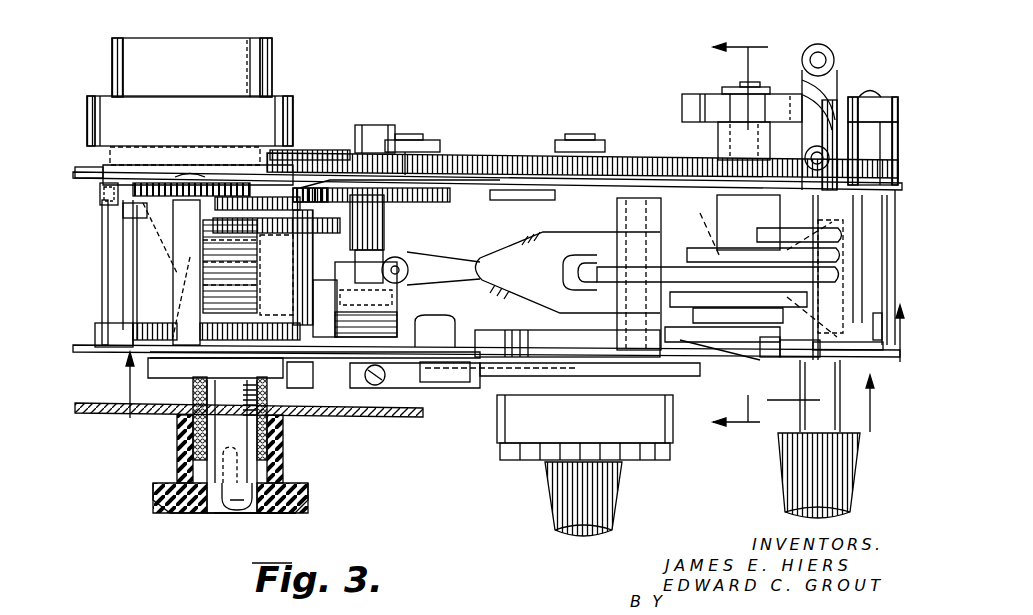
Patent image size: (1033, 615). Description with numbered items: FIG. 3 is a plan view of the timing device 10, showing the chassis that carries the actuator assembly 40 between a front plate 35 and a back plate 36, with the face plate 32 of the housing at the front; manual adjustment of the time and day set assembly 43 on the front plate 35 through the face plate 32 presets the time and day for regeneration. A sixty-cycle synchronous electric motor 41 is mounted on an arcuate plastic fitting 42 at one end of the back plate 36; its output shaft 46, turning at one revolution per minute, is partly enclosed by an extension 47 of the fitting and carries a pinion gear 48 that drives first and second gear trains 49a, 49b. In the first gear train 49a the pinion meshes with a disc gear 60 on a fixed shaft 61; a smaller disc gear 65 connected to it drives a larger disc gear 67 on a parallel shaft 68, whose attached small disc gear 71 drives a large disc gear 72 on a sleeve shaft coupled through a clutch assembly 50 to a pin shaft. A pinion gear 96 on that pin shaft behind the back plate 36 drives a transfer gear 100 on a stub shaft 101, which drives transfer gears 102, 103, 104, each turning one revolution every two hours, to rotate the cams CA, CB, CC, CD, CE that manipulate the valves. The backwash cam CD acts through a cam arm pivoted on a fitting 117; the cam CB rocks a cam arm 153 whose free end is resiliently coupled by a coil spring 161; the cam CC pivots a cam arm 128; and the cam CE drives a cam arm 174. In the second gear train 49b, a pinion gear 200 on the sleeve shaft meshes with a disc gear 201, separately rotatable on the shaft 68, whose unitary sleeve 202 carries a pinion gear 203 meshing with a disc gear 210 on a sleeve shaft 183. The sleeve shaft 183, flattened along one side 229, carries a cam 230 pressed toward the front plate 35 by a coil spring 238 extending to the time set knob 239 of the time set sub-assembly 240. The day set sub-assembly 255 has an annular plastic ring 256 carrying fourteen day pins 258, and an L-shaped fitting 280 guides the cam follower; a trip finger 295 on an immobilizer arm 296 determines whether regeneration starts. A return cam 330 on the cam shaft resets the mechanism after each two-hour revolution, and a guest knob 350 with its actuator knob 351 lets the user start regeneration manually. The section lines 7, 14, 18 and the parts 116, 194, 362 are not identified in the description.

The timing device 10 is at (442, 522).
The section line 14 is at (495, 403).
The section line 18 is at (300, 365).
The face plate 32 is at (388, 415).
The front plate 35 is at (690, 385).
The back plate 36 is at (505, 188).
The actuator assembly 40 is at (640, 198).
The electric motor 41 is at (172, 45).
The arcuate plastic fitting 42 is at (112, 148).
The time and day set assembly 43 is at (533, 472).
The output shaft 46 is at (140, 140).
The extension 47 is at (104, 205).
The pinion gear 48 is at (134, 218).
The first gear train 49a is at (445, 185).
The second gear train 49b is at (158, 312).
The clutch assembly 50 is at (403, 299).
The disc gear 60 is at (160, 185).
The fixed shaft 61 is at (178, 292).
The smaller disc gear 65 is at (205, 190).
The larger disc gear 67 is at (233, 192).
The parallel shaft 68 is at (262, 292).
The small disc gear 71 is at (290, 186).
The large disc gear 72 is at (435, 200).
The pinion gear 96 is at (372, 124).
The transfer gear 100 is at (440, 150).
The stub shaft 101 is at (408, 136).
The transfer gear 102 is at (540, 160).
The transfer gear 103 is at (318, 165).
The transfer gear 104 is at (708, 172).
The bearing block 116 is at (880, 100).
The fitting 117 is at (832, 48).
The cam arm 128 is at (637, 272).
The cam arm 153 is at (500, 248).
The coil spring 161 is at (410, 265).
The cam arm 174 is at (870, 190).
The sleeve shaft 183 is at (228, 457).
The post 194 is at (104, 265).
The pinion gear 200 is at (385, 222).
The disc gear 201 is at (383, 252).
The sleeve 202 is at (294, 290).
The pinion gear 203 is at (290, 415).
The disc gear 210 is at (122, 356).
The flattened side 229 is at (238, 430).
The cam 230 is at (193, 375).
The coil spring 238 is at (195, 435).
The time set knob 239 is at (165, 520).
The time set sub-assembly 240 is at (240, 525).
The day set sub-assembly 255 is at (598, 386).
The annular plastic ring 256 is at (498, 445).
The day pins 258 is at (642, 462).
The L-shaped fitting 280 is at (530, 390).
The trip finger 295 is at (440, 372).
The immobilizer arm 296 is at (540, 330).
The return cam 330 is at (778, 345).
The guest knob 350 is at (773, 442).
The actuator knob 351 is at (785, 490).
The plate 362 is at (350, 420).
The section line 7- 7 is at (766, 232).
The cam CA is at (275, 252).
The cam CB is at (687, 300).
The cam CC is at (738, 248).
The backwash cam CD is at (710, 100).
The cam CE is at (759, 266).